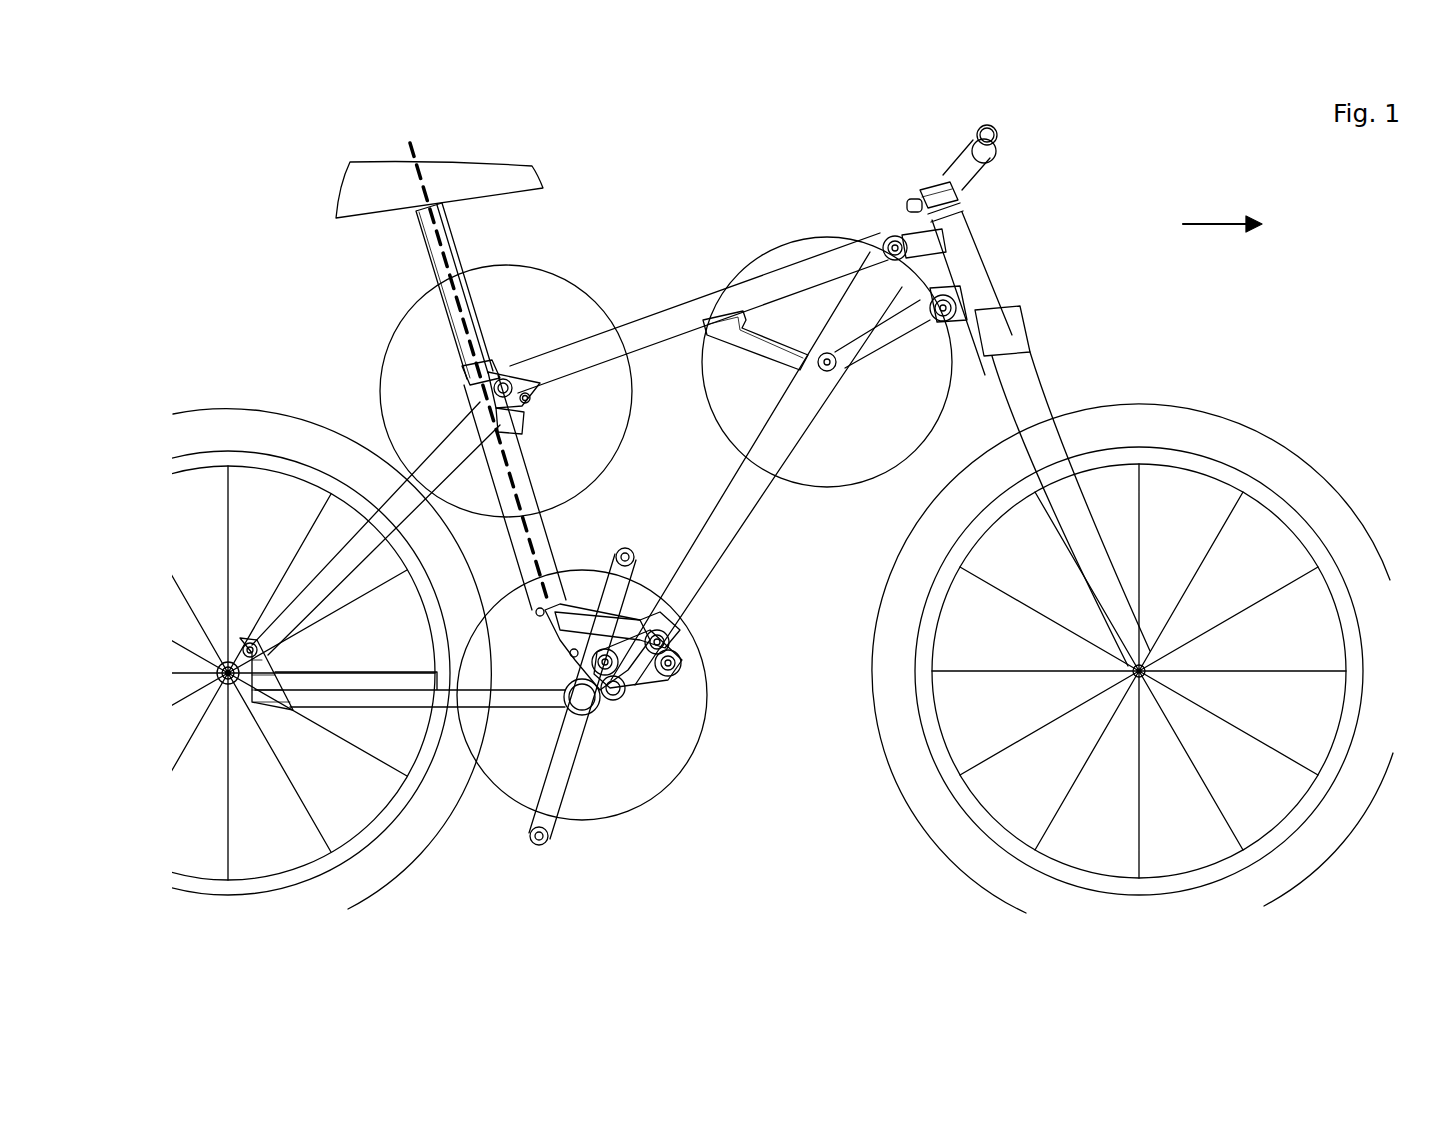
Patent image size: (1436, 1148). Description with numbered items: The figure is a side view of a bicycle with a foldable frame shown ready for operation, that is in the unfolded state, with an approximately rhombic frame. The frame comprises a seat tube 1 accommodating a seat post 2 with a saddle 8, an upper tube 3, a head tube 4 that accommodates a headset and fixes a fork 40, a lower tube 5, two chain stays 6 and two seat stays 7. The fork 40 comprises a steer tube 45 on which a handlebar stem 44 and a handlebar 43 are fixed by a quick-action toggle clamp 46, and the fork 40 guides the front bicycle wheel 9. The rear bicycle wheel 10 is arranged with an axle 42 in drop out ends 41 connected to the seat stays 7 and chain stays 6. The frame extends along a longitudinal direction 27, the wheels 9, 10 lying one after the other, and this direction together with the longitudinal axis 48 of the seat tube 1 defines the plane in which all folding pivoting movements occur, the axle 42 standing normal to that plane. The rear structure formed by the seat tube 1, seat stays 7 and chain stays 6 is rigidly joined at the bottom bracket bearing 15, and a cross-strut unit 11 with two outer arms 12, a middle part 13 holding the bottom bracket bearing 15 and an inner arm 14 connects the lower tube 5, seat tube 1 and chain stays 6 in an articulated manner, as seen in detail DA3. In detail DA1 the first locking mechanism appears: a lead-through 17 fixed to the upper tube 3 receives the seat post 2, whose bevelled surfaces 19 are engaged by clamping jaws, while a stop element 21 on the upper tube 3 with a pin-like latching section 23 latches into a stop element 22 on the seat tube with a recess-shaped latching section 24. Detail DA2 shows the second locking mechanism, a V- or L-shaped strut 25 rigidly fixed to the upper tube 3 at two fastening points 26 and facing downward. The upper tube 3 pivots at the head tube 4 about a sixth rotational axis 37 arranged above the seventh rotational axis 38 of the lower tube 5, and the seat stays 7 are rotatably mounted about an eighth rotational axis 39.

The seat tube 1 is at (525, 548).
The seat post 2 is at (430, 250).
The upper tube 3 is at (672, 318).
The head tube 4 is at (972, 260).
The lower tube 5 is at (756, 468).
The chain stays 6 is at (517, 700).
The seat stays 7 is at (403, 492).
The saddle 8 is at (439, 190).
The front bicycle wheel 9 is at (1250, 445).
The rear bicycle wheel 10 is at (188, 418).
The cross-strut unit 11 is at (640, 718).
The outer arms 12 is at (637, 655).
The middle part 13 is at (570, 650).
The inner arm 14 is at (615, 625).
The bottom bracket bearing 15 is at (590, 715).
The lead-through 17 is at (485, 375).
The bevelled surfaces 19 is at (458, 258).
The stop element 21 is at (505, 378).
The stop element 22 is at (510, 420).
The latching section 23 is at (528, 400).
The latching section 24 is at (532, 383).
The strut 25 is at (866, 345).
The fastening points 26 is at (716, 318).
The longitudinal direction 27 is at (1208, 222).
The sixth rotational axis 37 is at (893, 245).
The seventh rotational axis 38 is at (960, 307).
The eighth rotational axis 39 is at (256, 645).
The fork 40 is at (1040, 410).
The drop out ends 41 is at (247, 643).
The axle 42 is at (235, 690).
The handlebar 43 is at (998, 134).
The handlebar stem 44 is at (970, 172).
The steer tube 45 is at (933, 190).
The quick-action toggle clamp 46 is at (910, 205).
The longitudinal axis 48 is at (418, 152).
The detail DA1 is at (421, 292).
The detail DA2 is at (822, 240).
The detail DA3 is at (707, 685).